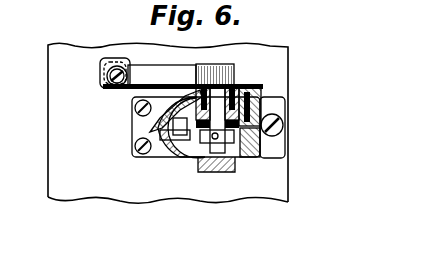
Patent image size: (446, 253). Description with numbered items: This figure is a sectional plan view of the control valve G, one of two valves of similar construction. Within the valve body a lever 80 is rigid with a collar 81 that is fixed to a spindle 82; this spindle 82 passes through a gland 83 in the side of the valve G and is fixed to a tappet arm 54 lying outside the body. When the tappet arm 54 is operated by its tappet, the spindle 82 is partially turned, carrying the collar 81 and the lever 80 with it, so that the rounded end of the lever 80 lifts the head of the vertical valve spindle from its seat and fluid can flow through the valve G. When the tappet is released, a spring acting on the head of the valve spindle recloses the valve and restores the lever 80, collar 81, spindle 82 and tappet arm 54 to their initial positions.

The tappet arm 54 is at (157, 80).
The lever 80 is at (185, 124).
The collar 81 is at (240, 155).
The spindle 82 is at (212, 100).
The gland 83 is at (236, 87).
The valve G is at (167, 157).